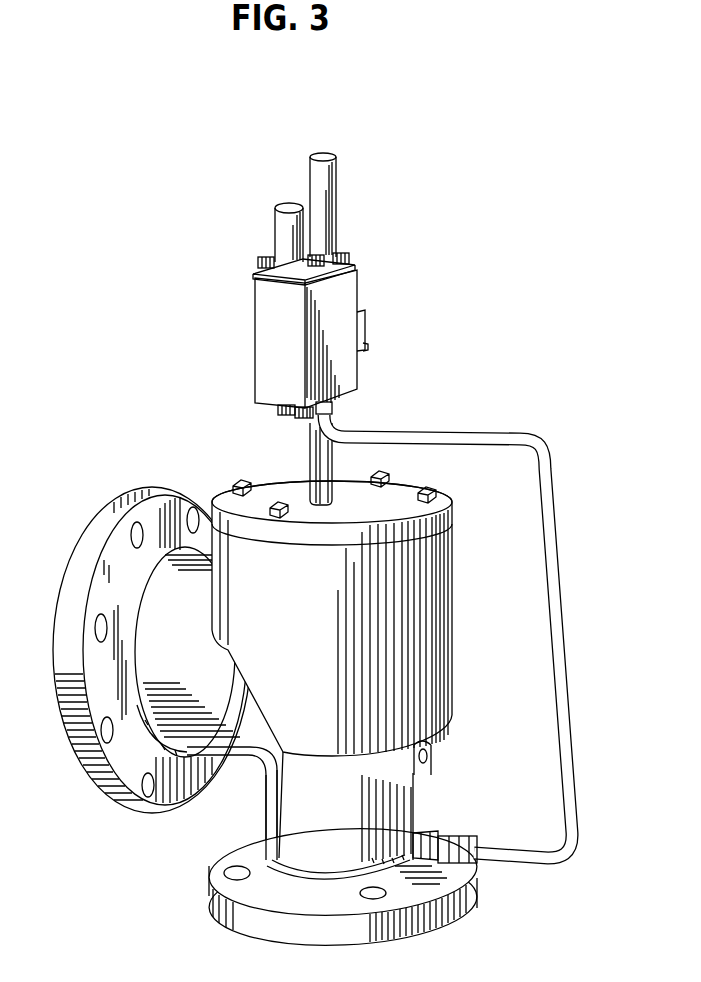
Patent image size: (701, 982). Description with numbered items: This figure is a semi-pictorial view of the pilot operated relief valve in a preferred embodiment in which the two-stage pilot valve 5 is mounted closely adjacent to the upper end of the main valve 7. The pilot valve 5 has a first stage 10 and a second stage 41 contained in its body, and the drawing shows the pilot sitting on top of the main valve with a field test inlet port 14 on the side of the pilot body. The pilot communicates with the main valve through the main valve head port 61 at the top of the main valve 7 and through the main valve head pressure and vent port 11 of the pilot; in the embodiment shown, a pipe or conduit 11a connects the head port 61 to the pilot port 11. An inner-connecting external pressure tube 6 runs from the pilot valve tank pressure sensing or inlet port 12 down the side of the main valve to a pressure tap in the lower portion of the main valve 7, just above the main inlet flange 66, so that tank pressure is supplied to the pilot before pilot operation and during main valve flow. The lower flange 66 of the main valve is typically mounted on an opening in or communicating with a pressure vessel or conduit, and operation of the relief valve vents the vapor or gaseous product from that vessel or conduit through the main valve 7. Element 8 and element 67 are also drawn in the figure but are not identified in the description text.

The first stage 10 is at (340, 232).
The second stage 41 is at (258, 276).
The main valve head pressure and vent port 11 is at (343, 400).
The field test inlet port 14 is at (364, 333).
The pilot valve 5 is at (366, 360).
The pipe or conduit 11a is at (310, 447).
The tank pressure sensing or inlet port 12 is at (333, 420).
The external pressure tube 6 is at (572, 723).
The main valve head port 61 is at (337, 503).
The boss 8 is at (414, 772).
The inlet flange 67 is at (137, 585).
The main valve 7 is at (224, 924).
The main inlet flange 66 is at (410, 930).